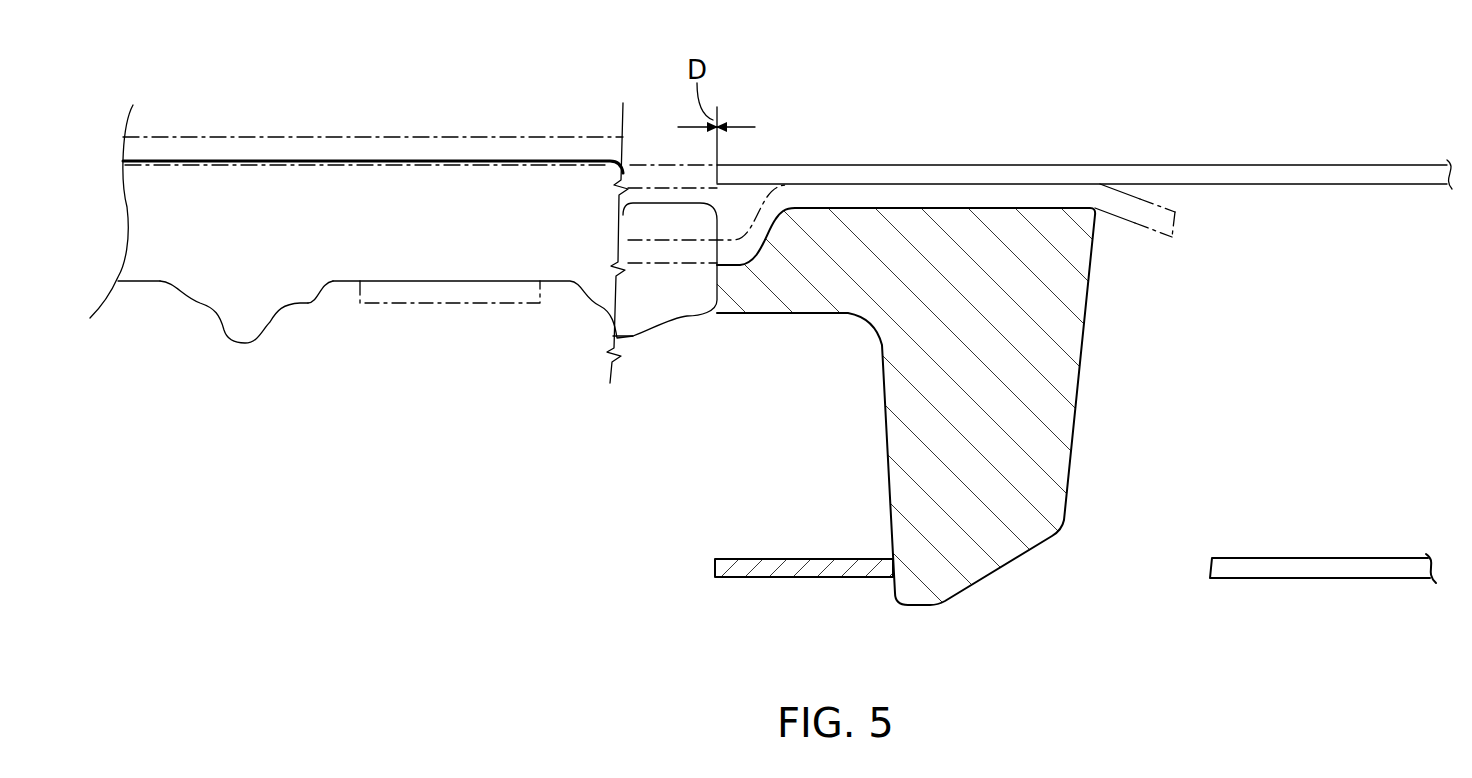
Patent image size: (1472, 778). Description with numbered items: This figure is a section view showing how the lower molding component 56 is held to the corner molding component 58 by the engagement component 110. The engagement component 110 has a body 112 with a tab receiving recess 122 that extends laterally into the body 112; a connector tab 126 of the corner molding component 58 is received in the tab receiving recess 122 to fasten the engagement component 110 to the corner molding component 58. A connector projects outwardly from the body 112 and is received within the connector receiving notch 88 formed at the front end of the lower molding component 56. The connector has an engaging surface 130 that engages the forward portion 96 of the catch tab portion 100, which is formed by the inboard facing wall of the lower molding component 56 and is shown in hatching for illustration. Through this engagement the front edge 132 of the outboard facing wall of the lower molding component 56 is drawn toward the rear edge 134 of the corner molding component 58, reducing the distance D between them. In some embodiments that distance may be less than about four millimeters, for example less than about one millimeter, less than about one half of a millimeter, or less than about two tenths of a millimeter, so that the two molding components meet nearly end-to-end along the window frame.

The lower molding component 56 is at (1084, 137).
The corner molding component 58 is at (420, 95).
The connector receiving notch 88 is at (1296, 626).
The forward portion 96 is at (896, 568).
The catch tab portion 100 is at (793, 614).
The engagement component 110 is at (361, 272).
The body 112 is at (185, 277).
The tab receiving recess 122 is at (348, 282).
The connector tab 126 is at (445, 293).
The engaging surface 130 is at (886, 450).
The front edge 132 is at (719, 178).
The rear edge 134 is at (713, 178).